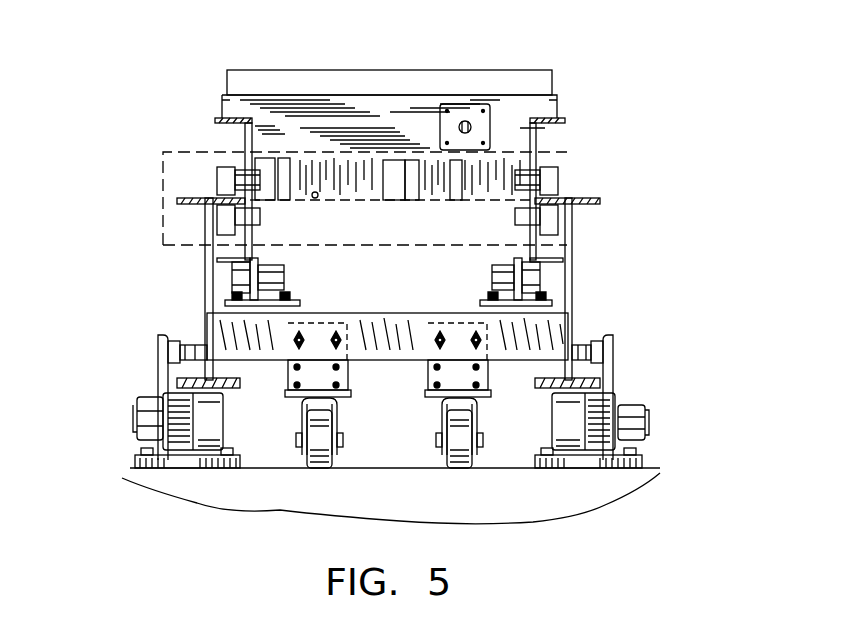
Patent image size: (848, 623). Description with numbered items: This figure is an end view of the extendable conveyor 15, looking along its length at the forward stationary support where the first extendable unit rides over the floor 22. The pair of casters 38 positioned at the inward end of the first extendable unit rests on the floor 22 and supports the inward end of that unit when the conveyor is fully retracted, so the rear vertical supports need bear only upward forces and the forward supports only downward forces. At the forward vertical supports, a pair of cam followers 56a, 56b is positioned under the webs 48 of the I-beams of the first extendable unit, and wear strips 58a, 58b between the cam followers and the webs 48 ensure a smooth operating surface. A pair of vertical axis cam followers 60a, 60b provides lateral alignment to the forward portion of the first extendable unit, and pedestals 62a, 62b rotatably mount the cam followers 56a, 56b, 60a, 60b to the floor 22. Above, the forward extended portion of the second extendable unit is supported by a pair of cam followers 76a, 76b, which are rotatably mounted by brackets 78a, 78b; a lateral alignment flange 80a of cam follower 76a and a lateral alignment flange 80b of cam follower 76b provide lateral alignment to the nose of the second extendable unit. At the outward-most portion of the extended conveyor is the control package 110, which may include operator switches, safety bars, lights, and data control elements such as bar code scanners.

The extendable conveyor 15 is at (560, 95).
The control package 110 is at (535, 155).
The cam follower 76a is at (238, 281).
The cam follower 76b is at (545, 278).
The lateral alignment flange 80a is at (255, 264).
The lateral alignment flange 80b is at (513, 264).
The bracket 78a is at (265, 300).
The bracket 78b is at (515, 300).
The vertical axis cam follower 60a is at (156, 350).
The vertical axis cam follower 60b is at (585, 340).
The web 48 is at (233, 380).
The wear strip 58a is at (197, 390).
The wear strip 58b is at (610, 412).
The cam follower 56a is at (208, 450).
The cam follower 56b is at (567, 440).
The pedestal 62a is at (190, 452).
The pedestal 62b is at (603, 453).
The casters 38 is at (445, 465).
The floor 22 is at (492, 458).